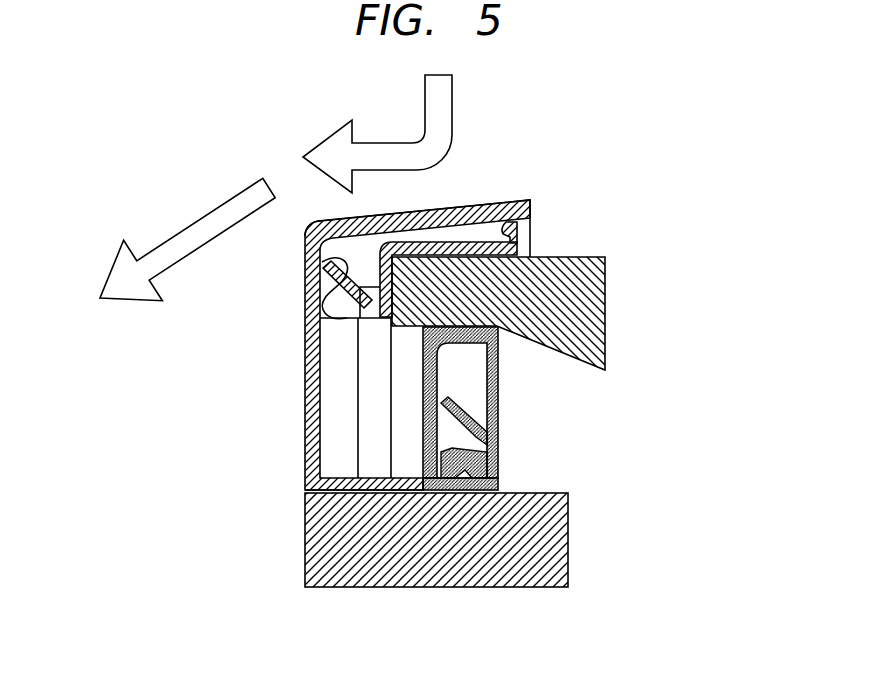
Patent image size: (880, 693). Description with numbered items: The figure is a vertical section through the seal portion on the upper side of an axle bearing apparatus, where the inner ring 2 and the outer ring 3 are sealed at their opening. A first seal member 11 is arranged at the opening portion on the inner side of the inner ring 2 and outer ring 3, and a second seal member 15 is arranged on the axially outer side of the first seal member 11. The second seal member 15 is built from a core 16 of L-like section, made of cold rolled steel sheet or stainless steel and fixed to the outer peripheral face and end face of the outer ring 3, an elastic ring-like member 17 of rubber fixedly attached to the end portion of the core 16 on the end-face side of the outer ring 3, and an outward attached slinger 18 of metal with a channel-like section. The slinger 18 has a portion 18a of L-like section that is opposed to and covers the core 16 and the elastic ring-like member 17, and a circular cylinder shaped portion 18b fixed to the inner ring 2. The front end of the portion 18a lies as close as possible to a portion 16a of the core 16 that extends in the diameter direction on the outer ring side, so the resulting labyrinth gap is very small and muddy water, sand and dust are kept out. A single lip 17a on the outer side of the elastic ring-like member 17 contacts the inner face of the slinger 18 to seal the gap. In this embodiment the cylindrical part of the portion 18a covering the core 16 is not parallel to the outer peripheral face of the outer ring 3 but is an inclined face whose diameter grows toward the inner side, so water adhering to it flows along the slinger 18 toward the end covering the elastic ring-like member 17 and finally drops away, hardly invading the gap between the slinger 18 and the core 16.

The inner ring 2 is at (393, 553).
The outer ring 3 is at (588, 300).
The first seal member 11 is at (510, 407).
The second seal member 15 is at (309, 215).
The core 16 is at (430, 250).
The portion on a side of the outer ring extended in a diameter direction of the core 16a is at (517, 233).
The elastic ring-like member 17 is at (335, 306).
The lip 17a is at (325, 268).
The outward attached slinger 18 is at (305, 383).
The portion having a section in an L-like shape 18a is at (498, 202).
The portion in a circular cylinder shape 18b is at (320, 518).